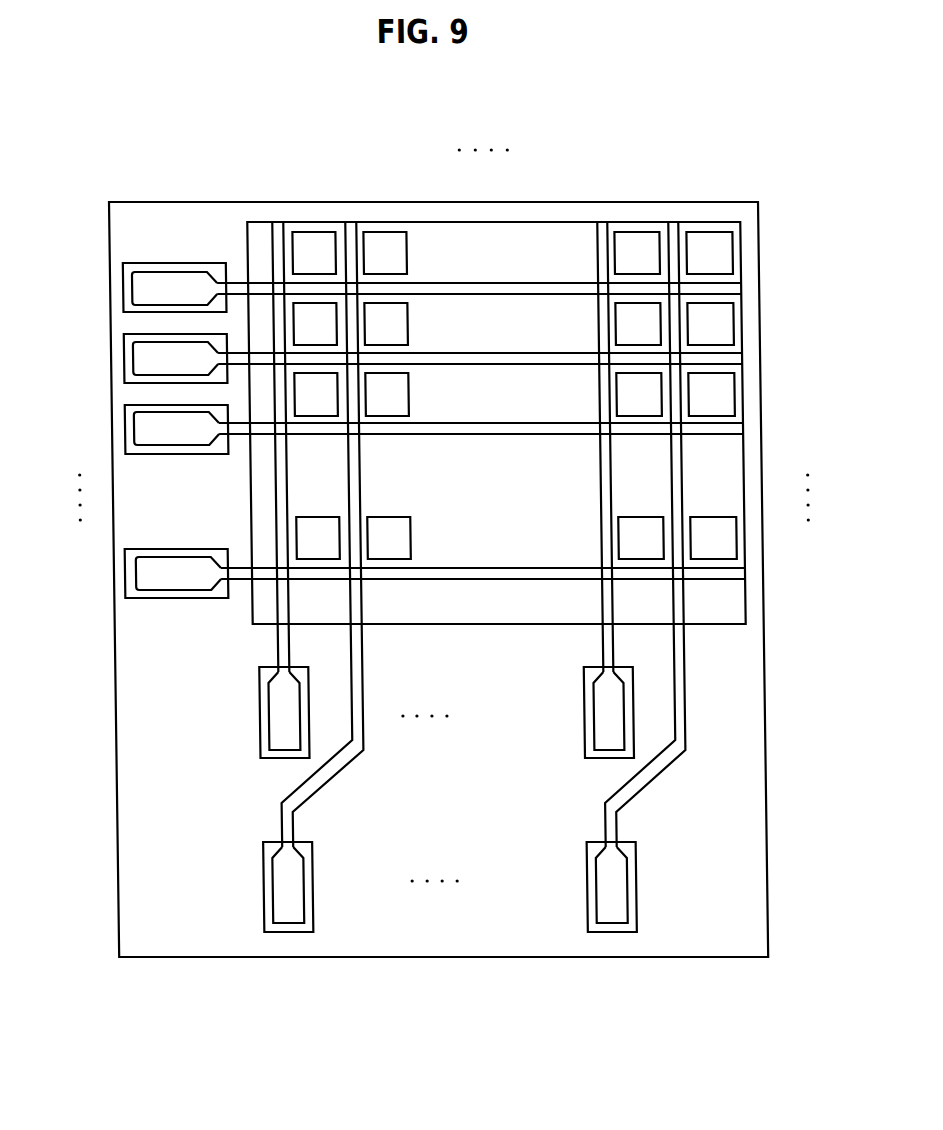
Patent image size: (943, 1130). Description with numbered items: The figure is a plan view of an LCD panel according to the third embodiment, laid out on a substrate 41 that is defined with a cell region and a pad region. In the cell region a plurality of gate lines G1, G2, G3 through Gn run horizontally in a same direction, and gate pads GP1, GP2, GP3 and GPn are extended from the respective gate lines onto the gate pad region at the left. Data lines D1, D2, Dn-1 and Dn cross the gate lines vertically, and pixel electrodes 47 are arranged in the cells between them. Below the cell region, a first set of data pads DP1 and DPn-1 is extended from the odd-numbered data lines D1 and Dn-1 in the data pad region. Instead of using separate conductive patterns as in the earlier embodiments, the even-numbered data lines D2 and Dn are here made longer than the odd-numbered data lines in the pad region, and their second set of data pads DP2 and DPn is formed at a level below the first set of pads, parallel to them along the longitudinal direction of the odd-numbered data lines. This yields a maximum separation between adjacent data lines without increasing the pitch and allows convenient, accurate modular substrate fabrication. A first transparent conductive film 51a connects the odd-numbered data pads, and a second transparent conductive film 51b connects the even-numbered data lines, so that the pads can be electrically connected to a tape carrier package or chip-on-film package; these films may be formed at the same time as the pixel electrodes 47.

The substrate 41 is at (758, 707).
The pixel electrode 47 is at (716, 252).
The gate line G1 is at (732, 289).
The gate line G2 is at (736, 360).
The gate line G3 is at (738, 428).
The gate line Gn is at (740, 575).
The gate pad GP1 is at (140, 292).
The gate pad GP2 is at (140, 360).
The gate pad GP3 is at (140, 430).
The gate pad GPn is at (138, 575).
The data line D1 is at (279, 228).
The data line D2 is at (349, 228).
The data line Dn-1 is at (599, 228).
The data line Dn is at (671, 228).
The data pad DP1 is at (266, 700).
The data pad DP2 is at (266, 868).
The data pad DPn-1 is at (593, 713).
The data pad DPn is at (598, 892).
The first transparent conductive film 51a is at (258, 738).
The second transparent conductive film 51b is at (260, 905).